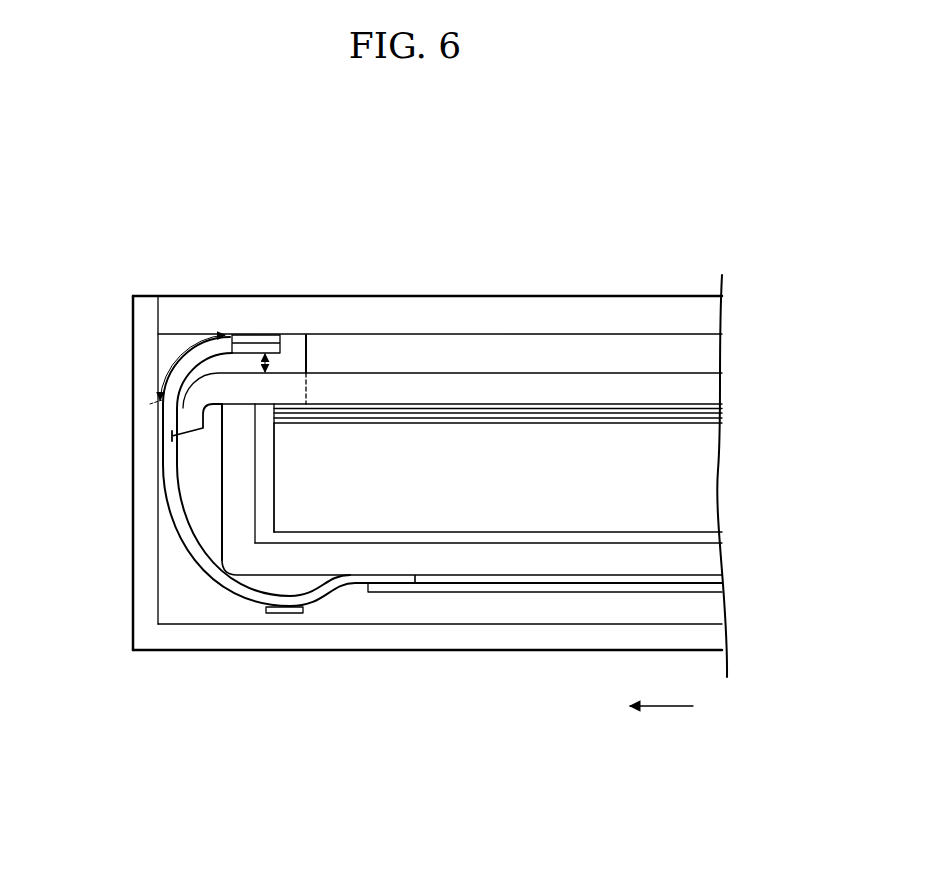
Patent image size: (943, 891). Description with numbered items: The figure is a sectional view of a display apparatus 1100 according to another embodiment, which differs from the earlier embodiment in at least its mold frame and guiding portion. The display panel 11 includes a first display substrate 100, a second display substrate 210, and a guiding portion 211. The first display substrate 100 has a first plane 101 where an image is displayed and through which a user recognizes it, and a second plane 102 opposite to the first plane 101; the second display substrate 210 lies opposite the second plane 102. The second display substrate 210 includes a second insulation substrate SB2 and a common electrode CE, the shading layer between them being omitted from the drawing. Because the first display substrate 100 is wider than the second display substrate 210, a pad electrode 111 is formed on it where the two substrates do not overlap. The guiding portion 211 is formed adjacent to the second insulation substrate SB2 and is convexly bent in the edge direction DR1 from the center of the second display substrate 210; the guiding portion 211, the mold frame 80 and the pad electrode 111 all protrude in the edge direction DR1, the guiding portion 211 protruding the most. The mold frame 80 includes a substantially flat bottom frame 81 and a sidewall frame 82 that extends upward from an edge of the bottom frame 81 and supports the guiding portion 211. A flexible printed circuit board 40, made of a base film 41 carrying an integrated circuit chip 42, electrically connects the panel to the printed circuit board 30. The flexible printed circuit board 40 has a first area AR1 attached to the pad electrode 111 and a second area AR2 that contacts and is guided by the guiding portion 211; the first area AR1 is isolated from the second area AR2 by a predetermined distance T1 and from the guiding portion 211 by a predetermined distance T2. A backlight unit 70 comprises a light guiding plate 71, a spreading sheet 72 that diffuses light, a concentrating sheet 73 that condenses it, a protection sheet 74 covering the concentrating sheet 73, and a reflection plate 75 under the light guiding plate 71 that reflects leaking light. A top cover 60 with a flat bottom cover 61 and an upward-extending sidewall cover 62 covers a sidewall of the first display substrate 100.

The display apparatus 1100 is at (713, 241).
The display panel 11 is at (427, 283).
The first display substrate 100 is at (427, 264).
The first plane 101 is at (585, 300).
The second plane 102 is at (650, 333).
The second display substrate 210 is at (452, 301).
The guiding portion 211 is at (309, 335).
The second insulation substrate SB2 is at (392, 383).
The common electrode CE is at (455, 345).
The pad electrode 111 is at (255, 347).
The predetermined distance T1 is at (182, 352).
The predetermined distance T2 is at (265, 363).
The first area AR1 is at (233, 336).
The second area AR2 is at (165, 421).
The backlight unit 70 is at (523, 465).
The light guiding plate 71 is at (708, 478).
The spreading sheet 72 is at (725, 421).
The concentrating sheet 73 is at (725, 412).
The protection sheet 74 is at (725, 404).
The reflection plate 75 is at (519, 539).
The mold frame 80 is at (374, 494).
The bottom frame 81 is at (283, 563).
The sidewall frame 82 is at (230, 500).
The top cover 60 is at (374, 488).
The bottom cover 61 is at (200, 638).
The sidewall cover 62 is at (142, 596).
The flexible printed circuit board 40 is at (442, 539).
The base film 41 is at (327, 594).
The integrated circuit chip 42 is at (285, 613).
The printed circuit board 30 is at (537, 592).
The edge direction DR1 is at (681, 707).